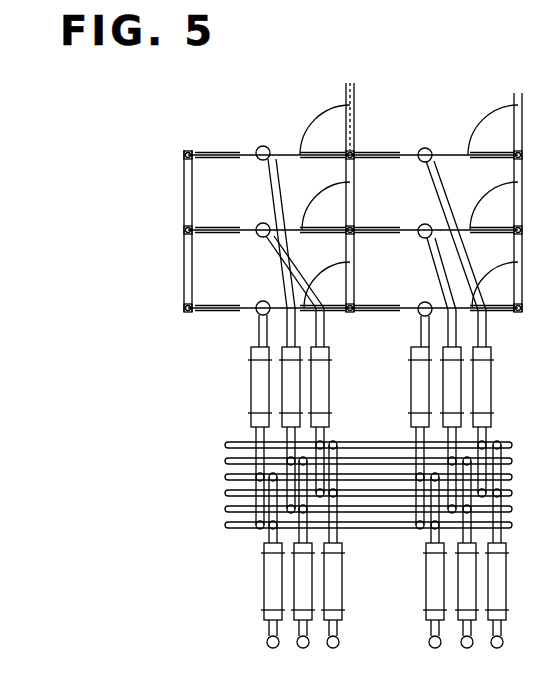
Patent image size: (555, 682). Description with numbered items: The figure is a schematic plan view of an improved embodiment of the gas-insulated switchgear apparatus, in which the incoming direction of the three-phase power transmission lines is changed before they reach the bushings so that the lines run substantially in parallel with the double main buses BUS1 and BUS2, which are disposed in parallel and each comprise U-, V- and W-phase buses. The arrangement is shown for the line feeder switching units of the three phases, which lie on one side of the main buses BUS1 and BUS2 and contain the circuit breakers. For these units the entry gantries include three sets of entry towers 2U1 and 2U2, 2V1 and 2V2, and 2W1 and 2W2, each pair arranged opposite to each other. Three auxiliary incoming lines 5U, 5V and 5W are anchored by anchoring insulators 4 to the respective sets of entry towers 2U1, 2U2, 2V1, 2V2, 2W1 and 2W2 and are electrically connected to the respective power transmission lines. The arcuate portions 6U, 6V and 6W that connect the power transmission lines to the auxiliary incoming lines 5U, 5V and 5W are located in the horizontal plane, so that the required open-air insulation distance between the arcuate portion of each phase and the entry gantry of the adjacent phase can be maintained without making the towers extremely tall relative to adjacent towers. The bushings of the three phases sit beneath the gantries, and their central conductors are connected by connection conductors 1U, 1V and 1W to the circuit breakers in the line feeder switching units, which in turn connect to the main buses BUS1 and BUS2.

The anchoring insulator 4 is at (212, 150).
The auxiliary incoming line of U-phase 5U is at (258, 148).
The auxiliary incoming line of V-phase 5V is at (258, 224).
The auxiliary incoming line of W-phase 5W is at (258, 302).
The arcuate portion of U-phase 6U is at (320, 110).
The arcuate portion of V-phase 6V is at (330, 188).
The arcuate portion of W-phase 6W is at (328, 272).
The connection conductor of U-phase 1U is at (278, 170).
The connection conductor of V-phase 1V is at (268, 246).
The connection conductor of W-phase 1W is at (258, 336).
The entry tower of U-phase 2U1 is at (184, 153).
The entry tower of V-phase 2V1 is at (184, 230).
The entry tower of W-phase 2W1 is at (184, 308).
The entry tower of U-phase 2U2 is at (355, 160).
The entry tower of V-phase 2V2 is at (355, 234).
The entry tower of W-phase 2W2 is at (350, 313).
The main bus BUS1 is at (225, 477).
The main bus BUS2 is at (225, 525).